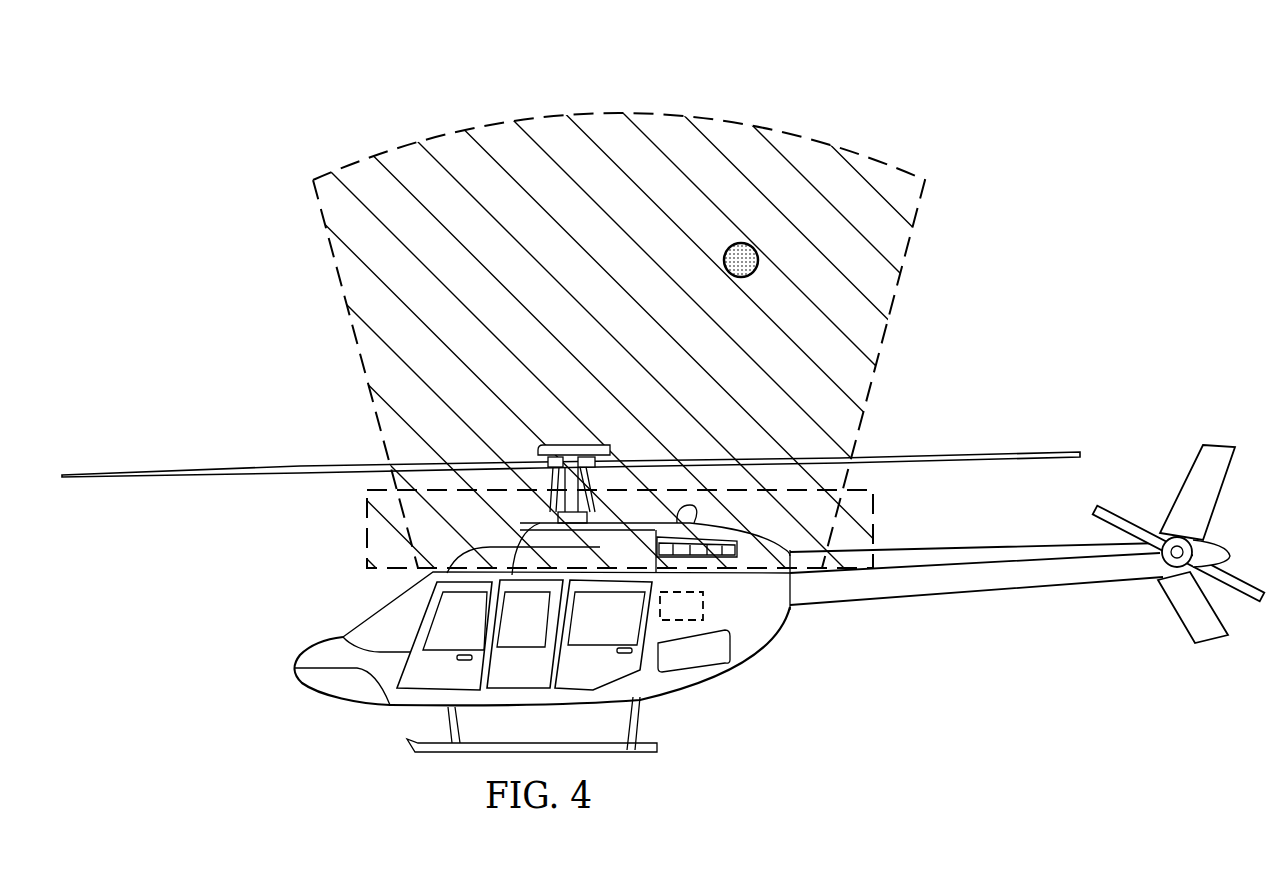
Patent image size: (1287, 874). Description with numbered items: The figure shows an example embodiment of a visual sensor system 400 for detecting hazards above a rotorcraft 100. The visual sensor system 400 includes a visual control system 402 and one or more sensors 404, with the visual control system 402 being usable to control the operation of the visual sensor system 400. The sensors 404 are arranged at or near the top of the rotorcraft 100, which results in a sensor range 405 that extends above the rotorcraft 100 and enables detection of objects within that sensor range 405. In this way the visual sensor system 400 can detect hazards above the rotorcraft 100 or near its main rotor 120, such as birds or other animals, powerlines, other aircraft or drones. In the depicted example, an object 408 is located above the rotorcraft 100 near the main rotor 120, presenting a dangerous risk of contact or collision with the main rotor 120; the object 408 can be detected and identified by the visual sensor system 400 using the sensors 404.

The rotorcraft 100 is at (663, 562).
The main rotor 120 is at (585, 432).
The visual sensor system 400 is at (352, 87).
The visual control system 402 is at (703, 607).
The sensors 404 is at (366, 512).
The sensor range 405 is at (340, 292).
The object 408 is at (758, 263).